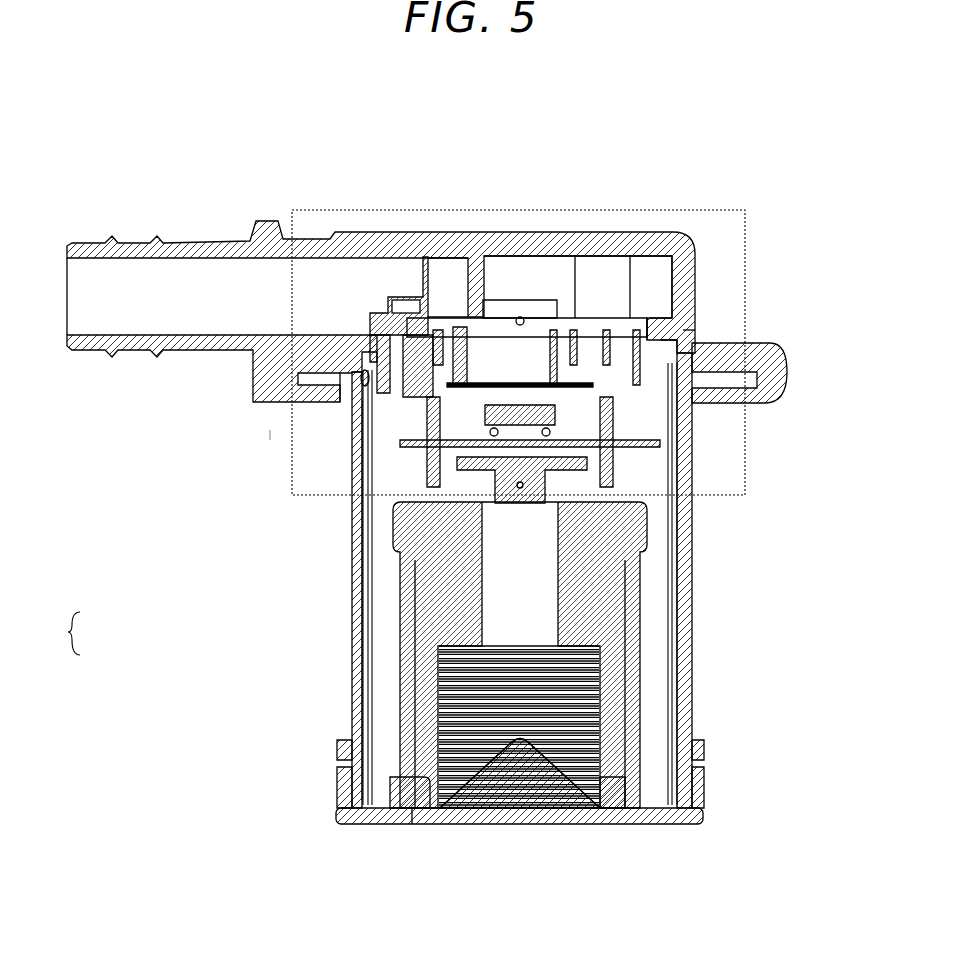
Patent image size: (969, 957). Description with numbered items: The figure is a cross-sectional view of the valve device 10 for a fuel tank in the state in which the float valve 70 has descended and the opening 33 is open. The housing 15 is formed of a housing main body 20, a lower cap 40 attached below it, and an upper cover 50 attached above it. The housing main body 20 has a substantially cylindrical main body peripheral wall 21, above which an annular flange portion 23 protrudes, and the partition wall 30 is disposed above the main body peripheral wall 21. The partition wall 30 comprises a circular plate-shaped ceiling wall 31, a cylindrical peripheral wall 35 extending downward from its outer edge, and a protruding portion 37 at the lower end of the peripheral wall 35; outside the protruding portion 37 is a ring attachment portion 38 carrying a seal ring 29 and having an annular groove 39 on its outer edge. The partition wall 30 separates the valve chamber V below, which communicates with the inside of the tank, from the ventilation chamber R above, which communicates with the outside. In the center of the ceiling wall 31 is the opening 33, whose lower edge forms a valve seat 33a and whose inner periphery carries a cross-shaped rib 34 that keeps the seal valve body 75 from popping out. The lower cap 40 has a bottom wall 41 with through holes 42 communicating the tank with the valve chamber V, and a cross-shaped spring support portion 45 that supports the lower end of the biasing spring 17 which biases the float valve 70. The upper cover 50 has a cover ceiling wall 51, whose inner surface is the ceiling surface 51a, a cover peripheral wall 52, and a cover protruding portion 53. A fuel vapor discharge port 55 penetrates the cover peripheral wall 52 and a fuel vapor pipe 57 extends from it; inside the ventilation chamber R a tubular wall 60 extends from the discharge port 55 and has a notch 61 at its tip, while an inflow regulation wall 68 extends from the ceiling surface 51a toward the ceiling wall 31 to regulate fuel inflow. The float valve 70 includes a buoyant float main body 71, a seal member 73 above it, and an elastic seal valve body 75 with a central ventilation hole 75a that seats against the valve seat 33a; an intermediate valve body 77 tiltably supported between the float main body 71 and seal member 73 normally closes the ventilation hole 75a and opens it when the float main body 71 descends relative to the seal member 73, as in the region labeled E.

The valve device 10 is at (330, 205).
The housing 15 is at (58, 633).
The biasing spring 17 is at (704, 764).
The housing main body 20 is at (340, 672).
The main body peripheral wall 21 is at (694, 600).
The flange portion 23 is at (765, 405).
The seal ring 29 is at (350, 365).
The partition wall 30 is at (605, 302).
The ceiling wall 31 is at (445, 303).
The opening 33 is at (600, 318).
The valve seat 33a is at (648, 322).
The rib 34 is at (555, 330).
The peripheral wall 35 is at (388, 316).
The protruding portion 37 is at (690, 332).
The ring attachment portion 38 is at (340, 420).
The annular groove 39 is at (299, 380).
The lower cap 40 is at (332, 812).
The bottom wall 41 is at (400, 826).
The through holes 42 is at (420, 826).
The spring support portion 45 is at (522, 820).
The upper cover 50 is at (270, 420).
The cover ceiling wall 51 is at (548, 330).
The ceiling surface 51a is at (697, 240).
The cover peripheral wall 52 is at (656, 300).
The cover protruding portion 53 is at (666, 343).
The fuel vapor discharge port 55 is at (368, 303).
The fuel vapor pipe 57 is at (190, 348).
The tubular wall 60 is at (435, 265).
The notch 61 is at (363, 395).
The inflow regulation wall 68 is at (500, 300).
The float valve 70 is at (662, 532).
The float main body 71 is at (642, 585).
The seal member 73 is at (605, 440).
The seal valve body 75 is at (592, 398).
The ventilation hole 75a is at (521, 317).
The intermediate valve body 77 is at (585, 452).
The region E is at (680, 208).
The ventilation chamber R is at (639, 285).
The valve chamber V is at (397, 391).